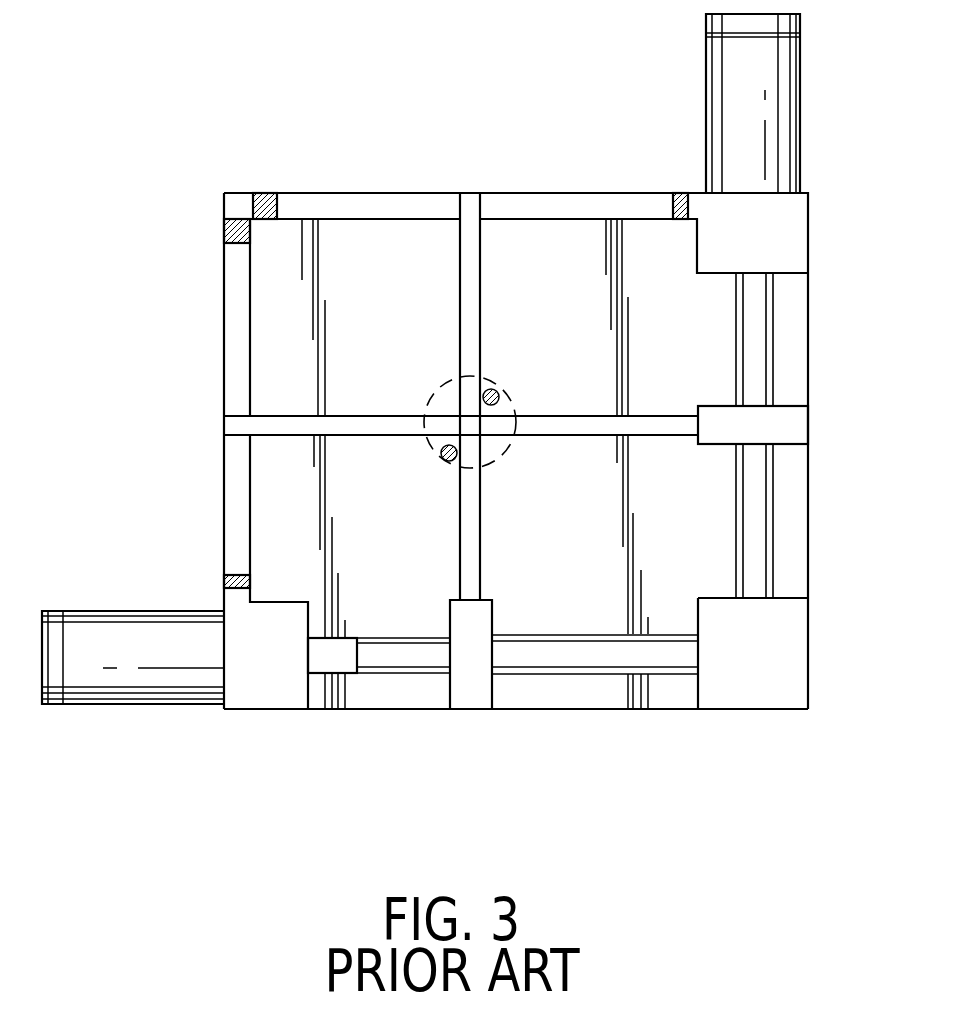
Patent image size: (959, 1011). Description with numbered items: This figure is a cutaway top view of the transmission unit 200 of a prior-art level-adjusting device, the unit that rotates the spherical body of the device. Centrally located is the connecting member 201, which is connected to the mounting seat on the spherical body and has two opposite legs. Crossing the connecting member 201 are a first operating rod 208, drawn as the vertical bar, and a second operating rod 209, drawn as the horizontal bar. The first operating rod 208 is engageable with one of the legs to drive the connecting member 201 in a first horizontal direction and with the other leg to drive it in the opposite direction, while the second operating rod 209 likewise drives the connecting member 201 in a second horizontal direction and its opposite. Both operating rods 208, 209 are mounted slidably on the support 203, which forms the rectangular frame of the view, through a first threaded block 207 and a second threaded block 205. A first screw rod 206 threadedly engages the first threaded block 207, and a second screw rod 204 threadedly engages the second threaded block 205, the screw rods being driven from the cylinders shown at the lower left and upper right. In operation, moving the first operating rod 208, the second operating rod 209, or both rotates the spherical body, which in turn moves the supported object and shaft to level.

The transmission unit 200 is at (661, 712).
The connecting member 201 is at (503, 410).
The support 203 is at (552, 710).
The second screw rod 204 is at (773, 332).
The second threaded block 205 is at (784, 413).
The first screw rod 206 is at (377, 673).
The first threaded block 207 is at (462, 690).
The first operating rod 208 is at (470, 297).
The second operating rod 209 is at (590, 423).